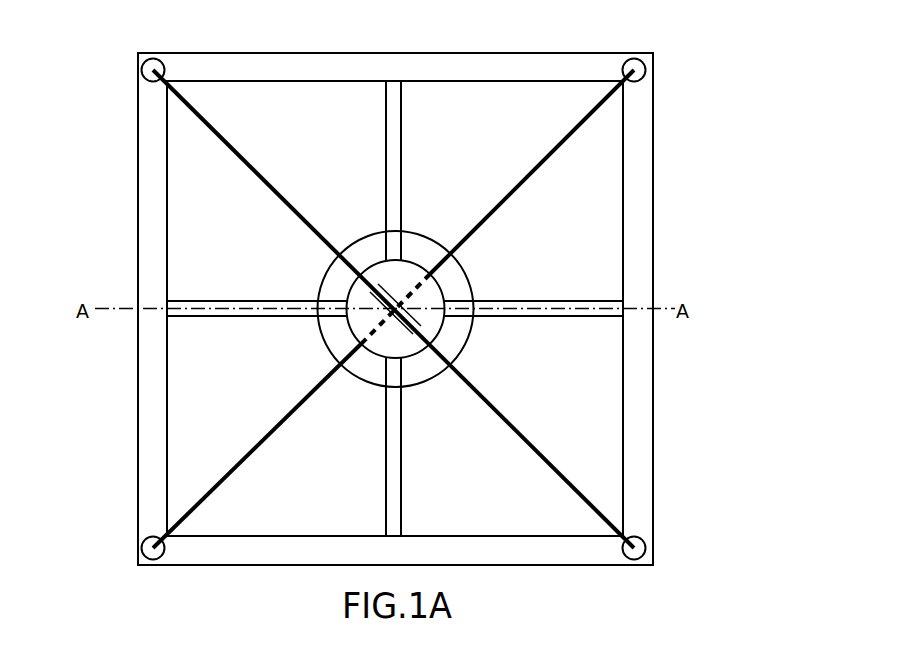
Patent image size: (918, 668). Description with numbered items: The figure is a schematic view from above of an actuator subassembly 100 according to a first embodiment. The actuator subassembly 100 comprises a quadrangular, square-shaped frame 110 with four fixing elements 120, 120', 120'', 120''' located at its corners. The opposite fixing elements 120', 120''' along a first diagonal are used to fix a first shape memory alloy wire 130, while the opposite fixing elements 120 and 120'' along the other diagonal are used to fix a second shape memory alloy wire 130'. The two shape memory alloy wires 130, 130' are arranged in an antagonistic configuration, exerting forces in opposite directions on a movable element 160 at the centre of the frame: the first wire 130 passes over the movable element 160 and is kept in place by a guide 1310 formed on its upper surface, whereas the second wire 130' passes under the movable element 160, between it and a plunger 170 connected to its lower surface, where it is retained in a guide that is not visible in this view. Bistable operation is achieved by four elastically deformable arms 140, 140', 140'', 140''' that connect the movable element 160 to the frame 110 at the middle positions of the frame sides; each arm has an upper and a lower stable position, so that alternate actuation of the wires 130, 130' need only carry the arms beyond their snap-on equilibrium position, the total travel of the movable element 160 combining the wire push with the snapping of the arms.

The actuator subassembly 100 is at (698, 249).
The quadrangular frame 110 is at (147, 237).
The fixing element 120 is at (93, 548).
The fixing element 120' is at (97, 59).
The fixing element 120'' is at (682, 53).
The fixing element 120''' is at (694, 541).
The first shape memory alloy wire 130 is at (393, 309).
The second shape memory alloy wire 130' is at (393, 342).
The elastically deformable arm 140 is at (192, 348).
The elastically deformable arm 140' is at (434, 171).
The elastically deformable arm 140'' is at (588, 355).
The elastically deformable arm 140''' is at (433, 446).
The movable element 160 is at (433, 241).
The plunger 170 is at (457, 337).
The guide 1310 is at (350, 338).